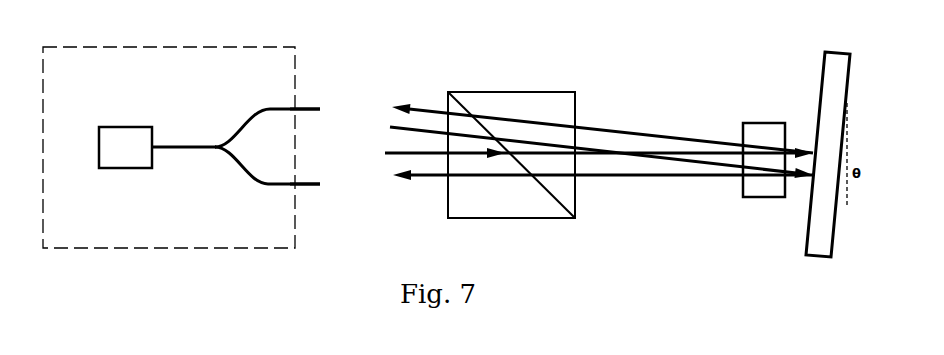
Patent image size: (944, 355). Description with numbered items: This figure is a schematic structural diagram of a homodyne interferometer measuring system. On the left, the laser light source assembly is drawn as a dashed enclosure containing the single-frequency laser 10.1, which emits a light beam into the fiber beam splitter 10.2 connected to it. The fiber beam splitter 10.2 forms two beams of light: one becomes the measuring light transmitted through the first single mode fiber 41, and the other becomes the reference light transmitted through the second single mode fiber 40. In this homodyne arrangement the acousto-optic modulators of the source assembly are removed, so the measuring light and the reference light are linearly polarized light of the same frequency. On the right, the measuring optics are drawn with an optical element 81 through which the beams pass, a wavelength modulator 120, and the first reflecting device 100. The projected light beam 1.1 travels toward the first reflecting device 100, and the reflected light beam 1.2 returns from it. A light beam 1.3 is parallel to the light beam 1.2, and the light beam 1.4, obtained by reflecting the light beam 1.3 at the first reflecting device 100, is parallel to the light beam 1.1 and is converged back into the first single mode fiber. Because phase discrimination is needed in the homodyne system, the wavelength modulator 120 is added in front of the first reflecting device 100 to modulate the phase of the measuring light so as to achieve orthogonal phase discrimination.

The single-frequency laser 10.1 is at (128, 127).
The fiber beam splitter 10.2 is at (212, 142).
The first single mode fiber 41 is at (305, 109).
The second single mode fiber 40 is at (305, 184).
The beam splitter 81 is at (512, 91).
The reflected light beam 1.2 is at (647, 129).
The light beam 1.3 is at (685, 160).
The projected light beam 1.1 is at (735, 148).
The light beam 1.4 is at (633, 177).
The wavelength modulator 120 is at (762, 198).
The first reflecting device 100 is at (820, 90).